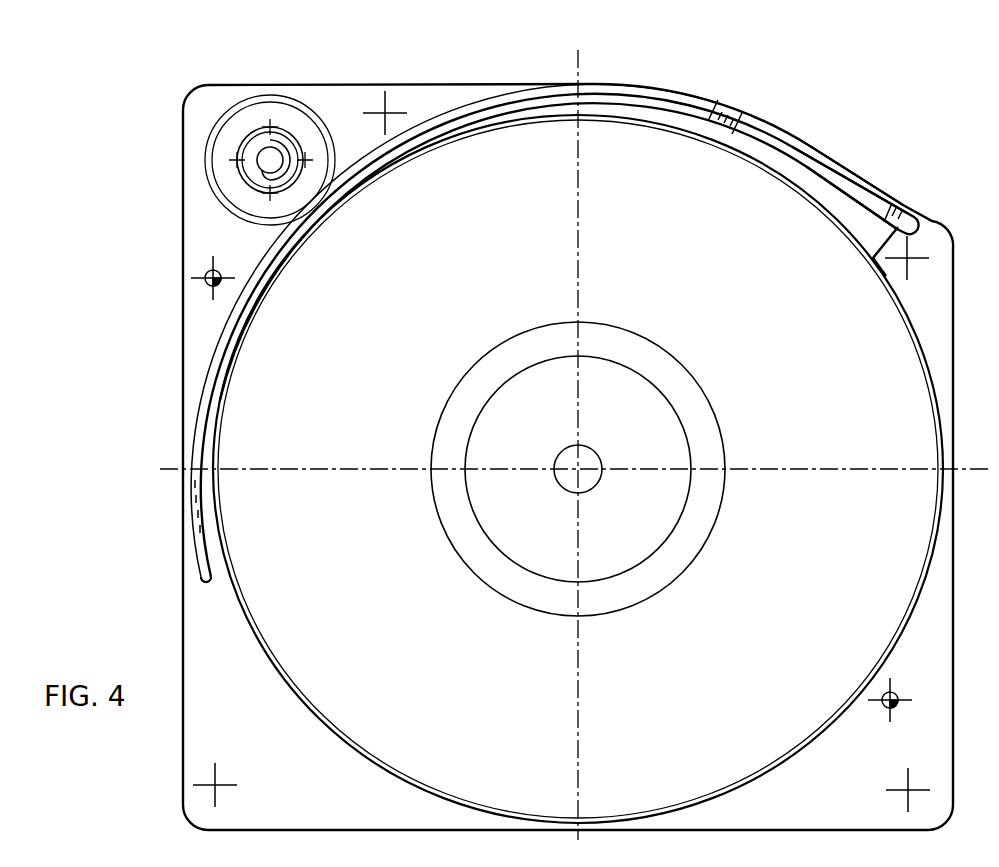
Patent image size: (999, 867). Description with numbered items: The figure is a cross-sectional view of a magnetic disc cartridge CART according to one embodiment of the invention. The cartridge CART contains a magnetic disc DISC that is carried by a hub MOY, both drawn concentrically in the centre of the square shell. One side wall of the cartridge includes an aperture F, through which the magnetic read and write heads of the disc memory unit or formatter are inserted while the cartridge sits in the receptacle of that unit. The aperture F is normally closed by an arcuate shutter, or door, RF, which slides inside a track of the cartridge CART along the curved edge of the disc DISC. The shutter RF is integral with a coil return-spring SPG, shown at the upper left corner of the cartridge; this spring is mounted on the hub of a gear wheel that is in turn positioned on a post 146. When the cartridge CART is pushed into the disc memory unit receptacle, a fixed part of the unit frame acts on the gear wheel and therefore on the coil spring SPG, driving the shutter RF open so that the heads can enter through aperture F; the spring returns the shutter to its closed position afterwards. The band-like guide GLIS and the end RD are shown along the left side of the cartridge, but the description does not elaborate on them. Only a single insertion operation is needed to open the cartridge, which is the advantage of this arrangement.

The post 146 is at (272, 158).
The coil return-spring SPG is at (243, 191).
The glide band GLIS is at (282, 258).
The aperture F is at (780, 142).
The arcuate shutter RF is at (832, 180).
The band end RD is at (205, 522).
The hub MOY is at (594, 614).
The magnetic disc DISC is at (320, 716).
The cartridge CART is at (953, 733).